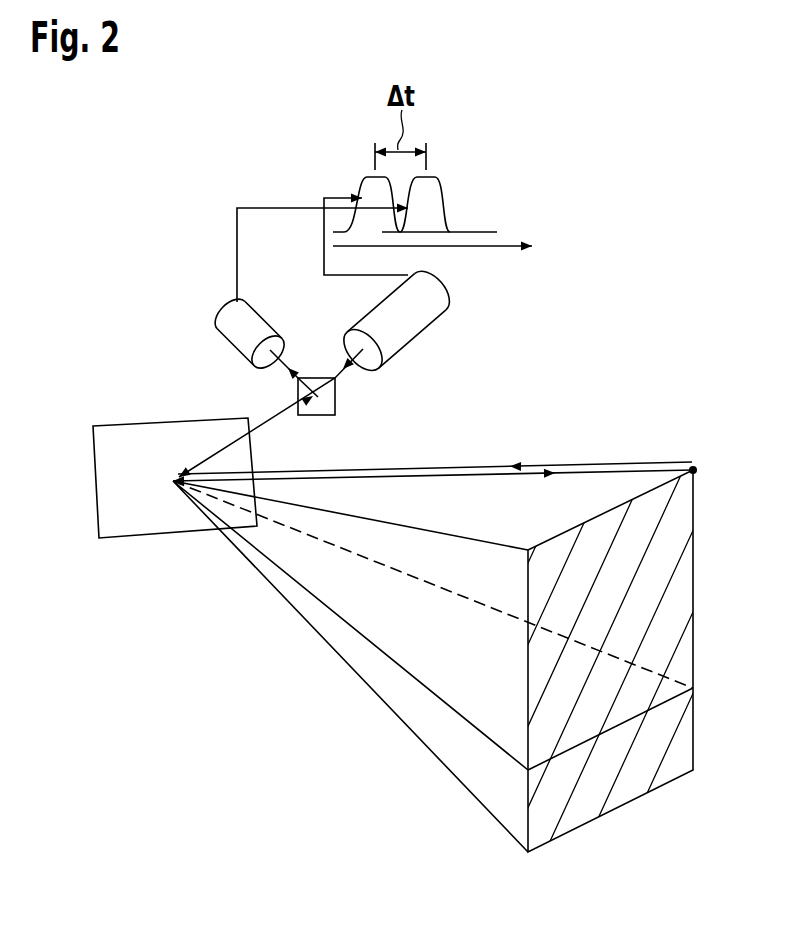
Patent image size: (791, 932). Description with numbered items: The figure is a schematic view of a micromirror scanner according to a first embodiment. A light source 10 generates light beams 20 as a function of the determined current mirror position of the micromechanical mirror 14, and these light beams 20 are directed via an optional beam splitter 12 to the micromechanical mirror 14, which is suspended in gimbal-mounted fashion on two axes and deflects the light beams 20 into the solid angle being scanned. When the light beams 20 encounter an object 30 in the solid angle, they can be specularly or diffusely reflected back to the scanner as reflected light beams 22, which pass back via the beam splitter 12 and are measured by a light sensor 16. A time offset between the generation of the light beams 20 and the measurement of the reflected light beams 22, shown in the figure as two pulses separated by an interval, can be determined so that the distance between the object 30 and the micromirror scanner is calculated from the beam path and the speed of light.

The light source 10 is at (428, 296).
The beam splitter 12 is at (323, 403).
The micromechanical mirror 14 is at (130, 516).
The light sensor 16 is at (235, 317).
The light beams 20 is at (383, 377).
The reflected light beams 22 is at (292, 378).
The object 30 is at (640, 768).